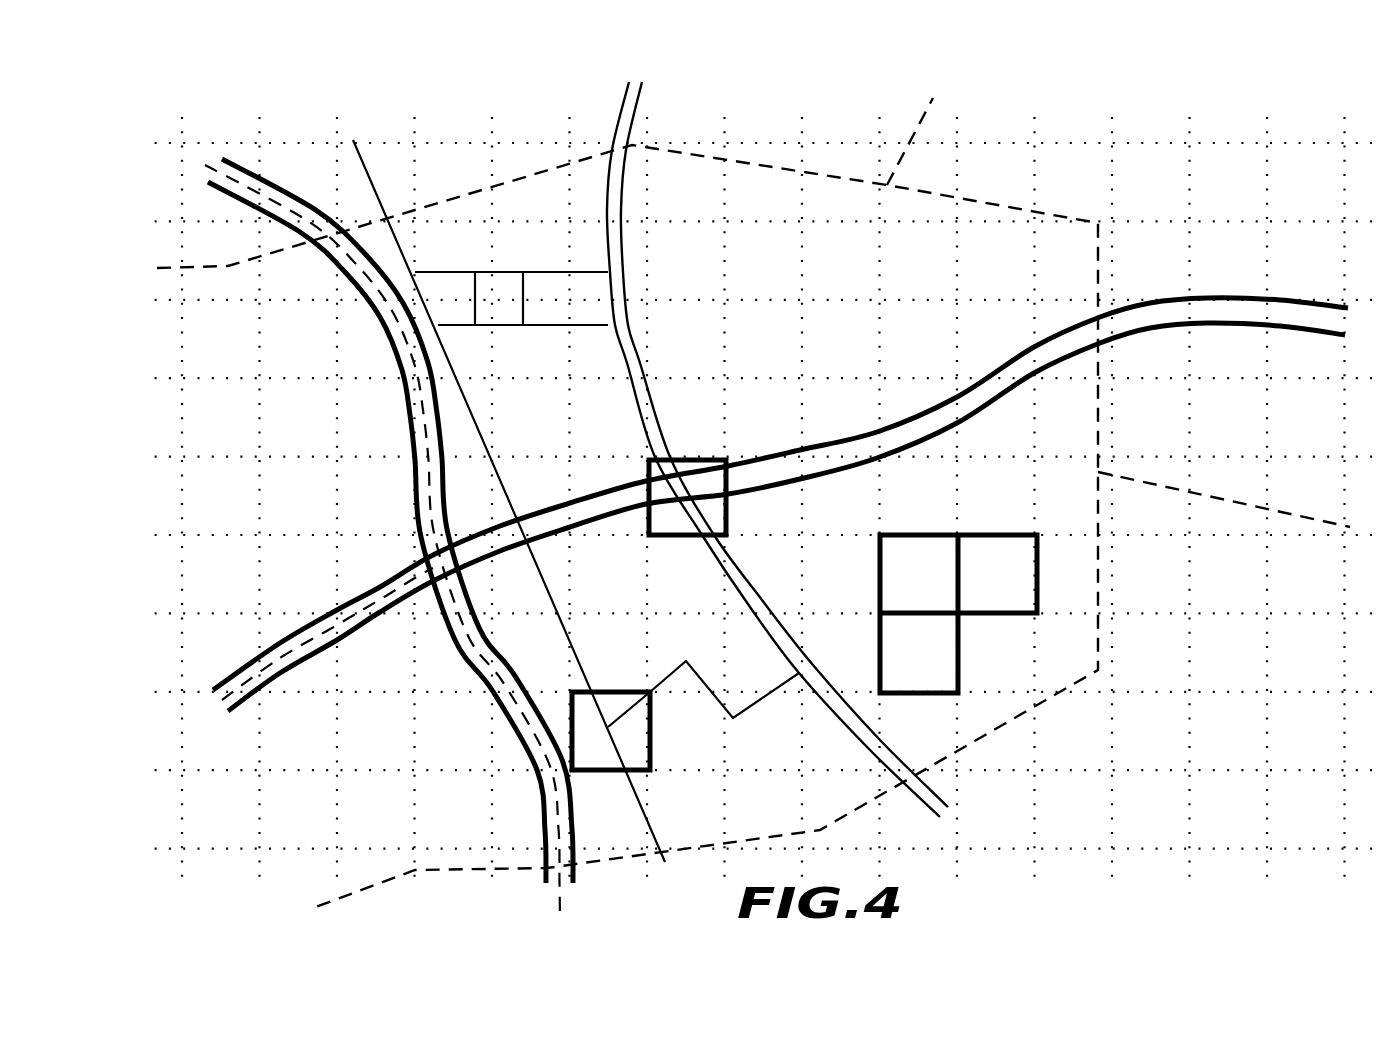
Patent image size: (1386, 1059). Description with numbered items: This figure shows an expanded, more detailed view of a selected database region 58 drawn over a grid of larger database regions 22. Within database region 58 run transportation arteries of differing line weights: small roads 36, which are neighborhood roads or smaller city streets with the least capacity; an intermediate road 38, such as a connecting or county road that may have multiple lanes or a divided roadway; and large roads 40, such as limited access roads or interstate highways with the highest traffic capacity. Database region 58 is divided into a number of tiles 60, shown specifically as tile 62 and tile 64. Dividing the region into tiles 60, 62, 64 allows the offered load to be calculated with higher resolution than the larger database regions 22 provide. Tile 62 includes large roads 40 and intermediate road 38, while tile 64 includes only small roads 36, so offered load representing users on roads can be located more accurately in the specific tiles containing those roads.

The database region 22 is at (190, 251).
The small road 36 is at (502, 271).
The intermediate road 38 is at (644, 369).
The large road 40 is at (410, 506).
The database region 58 is at (1053, 214).
The tiles 60 is at (905, 586).
The tile 62 is at (708, 455).
The tile 64 is at (651, 718).